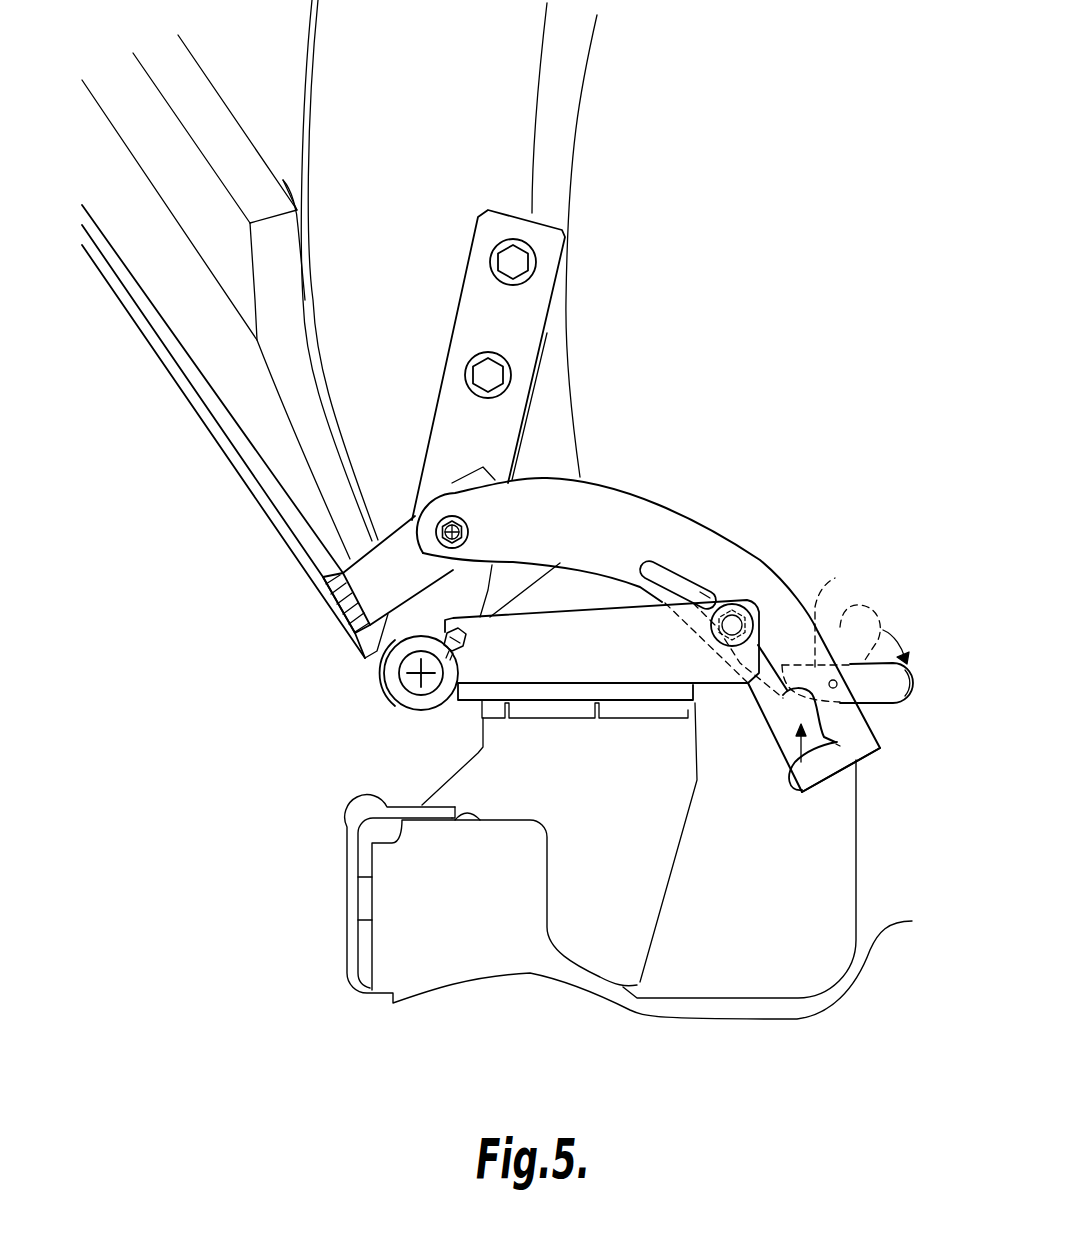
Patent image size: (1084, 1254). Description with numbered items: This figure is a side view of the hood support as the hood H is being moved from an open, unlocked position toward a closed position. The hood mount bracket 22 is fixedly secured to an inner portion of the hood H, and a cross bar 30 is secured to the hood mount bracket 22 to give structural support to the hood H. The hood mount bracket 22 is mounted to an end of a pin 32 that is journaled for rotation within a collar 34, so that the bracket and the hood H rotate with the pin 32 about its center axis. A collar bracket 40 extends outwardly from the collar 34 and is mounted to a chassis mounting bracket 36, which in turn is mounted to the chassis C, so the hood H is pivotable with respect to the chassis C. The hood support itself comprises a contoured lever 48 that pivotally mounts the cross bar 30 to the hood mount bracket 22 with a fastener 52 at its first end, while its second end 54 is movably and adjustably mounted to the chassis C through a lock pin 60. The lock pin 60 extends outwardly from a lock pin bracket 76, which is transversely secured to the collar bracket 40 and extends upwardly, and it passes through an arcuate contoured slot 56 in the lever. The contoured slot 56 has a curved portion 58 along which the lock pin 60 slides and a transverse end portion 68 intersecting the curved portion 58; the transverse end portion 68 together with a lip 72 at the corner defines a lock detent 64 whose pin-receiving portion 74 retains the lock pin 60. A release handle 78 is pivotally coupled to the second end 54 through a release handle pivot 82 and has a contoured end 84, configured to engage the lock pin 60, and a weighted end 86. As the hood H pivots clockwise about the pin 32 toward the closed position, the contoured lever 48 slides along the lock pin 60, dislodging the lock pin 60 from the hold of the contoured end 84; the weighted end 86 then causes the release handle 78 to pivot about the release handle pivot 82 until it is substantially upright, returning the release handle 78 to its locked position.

The hood H is at (572, 119).
The chassis C is at (735, 1008).
The hood mount bracket 22 is at (458, 340).
The cross bar 30 is at (363, 588).
The pin 32 is at (410, 687).
The collar 34 is at (388, 677).
The chassis mounting bracket 36 is at (660, 886).
The collar bracket 40 is at (473, 692).
The contoured lever 48 is at (607, 500).
The fastener 52 is at (433, 528).
The second end 54 is at (870, 748).
The contoured slot 56 is at (705, 587).
The curved portion 58 is at (668, 570).
The lock pin 60 is at (750, 610).
The lock detent 64 is at (808, 752).
The transverse end portion 68 is at (836, 744).
The lip 72 is at (790, 713).
The pin-receiving portion 74 is at (814, 698).
The lock pin bracket 76 is at (720, 683).
The release handle 78 is at (917, 669).
The release handle pivot 82 is at (838, 690).
The contoured end 84 is at (845, 631).
The weighted end 86 is at (905, 693).